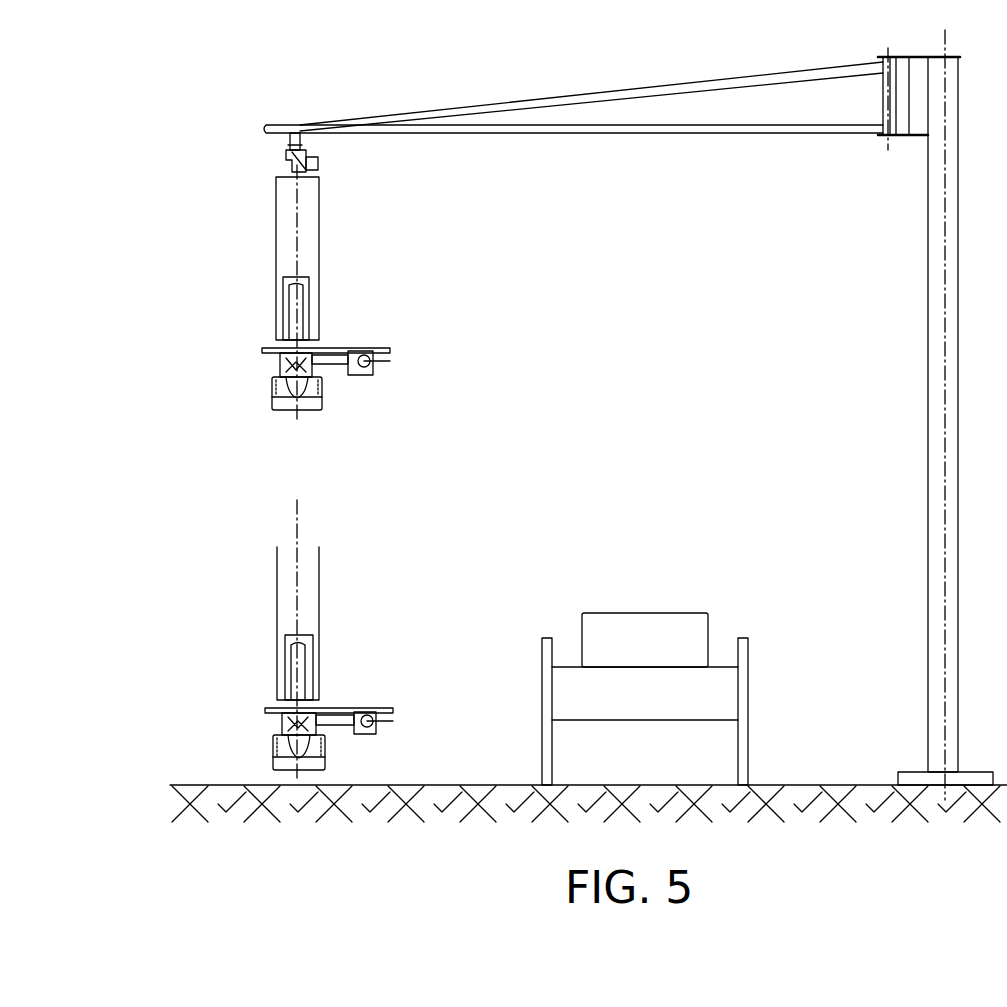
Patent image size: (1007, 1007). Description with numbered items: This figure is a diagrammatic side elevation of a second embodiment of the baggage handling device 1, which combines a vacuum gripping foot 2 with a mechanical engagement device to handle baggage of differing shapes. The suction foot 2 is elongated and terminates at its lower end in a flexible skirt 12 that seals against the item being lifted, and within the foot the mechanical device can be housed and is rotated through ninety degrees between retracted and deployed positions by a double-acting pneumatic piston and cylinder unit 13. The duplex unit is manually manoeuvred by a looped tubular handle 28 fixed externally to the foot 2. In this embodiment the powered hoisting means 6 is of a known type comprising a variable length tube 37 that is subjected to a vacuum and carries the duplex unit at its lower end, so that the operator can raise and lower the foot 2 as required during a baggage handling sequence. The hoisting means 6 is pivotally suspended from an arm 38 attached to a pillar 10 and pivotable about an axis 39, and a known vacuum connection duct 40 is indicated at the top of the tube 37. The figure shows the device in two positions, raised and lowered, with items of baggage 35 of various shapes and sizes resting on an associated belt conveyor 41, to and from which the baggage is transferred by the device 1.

The baggage handling device 1 is at (319, 456).
The vacuum gripping foot 2 is at (303, 575).
The powered hoisting means 6 is at (324, 268).
The pillar 10 is at (926, 380).
The flexible skirt 12 is at (326, 414).
The double-acting pneumatic piston and cylinder unit 13 is at (314, 662).
The looped tubular handle 28 is at (258, 355).
The items of baggage 35 is at (660, 606).
The variable length tube 37 is at (322, 228).
The arm 38 is at (596, 133).
The axis 39 is at (876, 148).
The vacuum connection duct 40 is at (326, 161).
The belt conveyor 41 is at (570, 658).